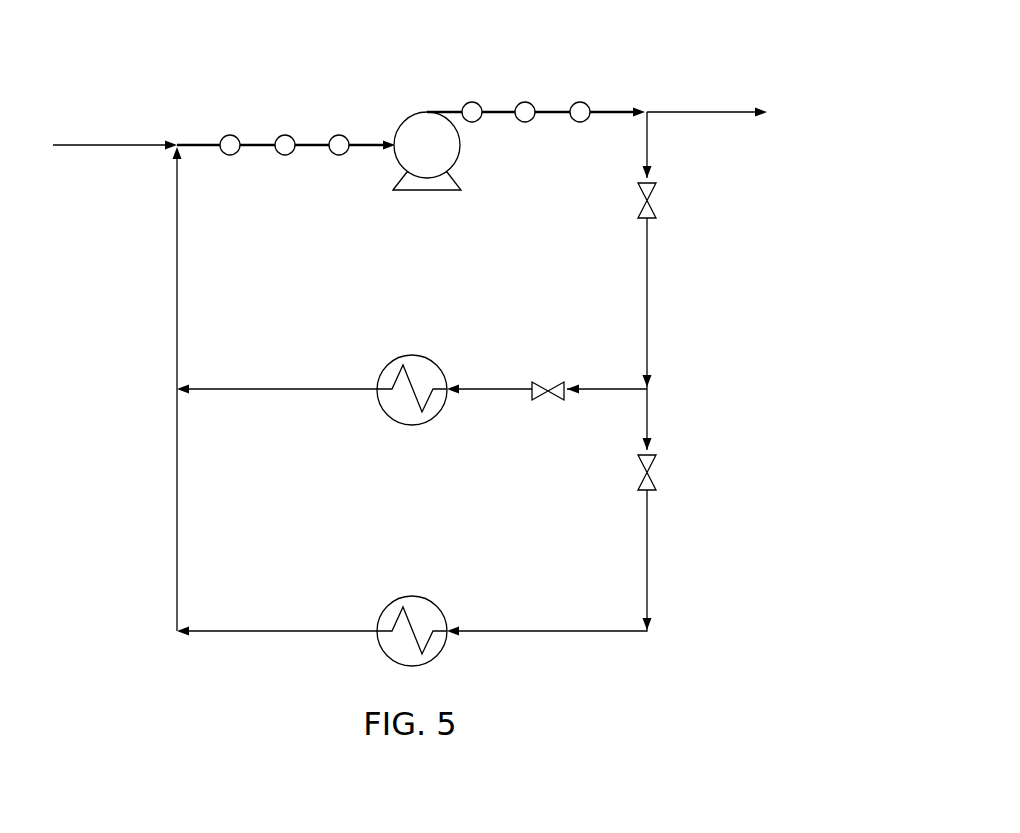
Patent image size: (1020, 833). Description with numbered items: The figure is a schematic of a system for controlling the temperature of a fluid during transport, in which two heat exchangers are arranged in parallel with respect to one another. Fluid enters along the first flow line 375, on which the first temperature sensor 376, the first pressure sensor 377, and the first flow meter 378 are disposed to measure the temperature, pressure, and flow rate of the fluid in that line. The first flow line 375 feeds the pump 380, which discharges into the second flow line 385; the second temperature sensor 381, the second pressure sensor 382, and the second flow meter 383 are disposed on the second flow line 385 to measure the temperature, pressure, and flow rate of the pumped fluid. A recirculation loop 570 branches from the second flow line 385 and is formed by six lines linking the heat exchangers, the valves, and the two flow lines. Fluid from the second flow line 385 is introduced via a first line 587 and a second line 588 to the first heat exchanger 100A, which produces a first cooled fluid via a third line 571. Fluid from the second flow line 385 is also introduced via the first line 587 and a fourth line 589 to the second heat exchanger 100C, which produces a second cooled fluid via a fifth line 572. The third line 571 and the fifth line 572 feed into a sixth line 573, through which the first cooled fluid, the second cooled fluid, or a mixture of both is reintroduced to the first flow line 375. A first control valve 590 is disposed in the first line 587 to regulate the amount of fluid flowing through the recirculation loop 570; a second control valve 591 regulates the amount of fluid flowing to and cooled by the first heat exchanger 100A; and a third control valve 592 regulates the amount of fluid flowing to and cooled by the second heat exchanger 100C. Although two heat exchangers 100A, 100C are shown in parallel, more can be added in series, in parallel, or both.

The first flow line 375 is at (98, 143).
The first temperature sensor 376 is at (230, 133).
The first pressure sensor 377 is at (285, 133).
The first flow meter 378 is at (339, 133).
The pump 380 is at (412, 159).
The second temperature sensor 381 is at (470, 100).
The second pressure sensor 382 is at (524, 100).
The second flow meter 383 is at (579, 100).
The second flow line 385 is at (550, 116).
The recirculation loop 570 is at (164, 213).
The third line 571 is at (342, 386).
The fifth line 572 is at (296, 628).
The sixth line 573 is at (180, 338).
The first line 587 is at (649, 333).
The second line 588 is at (481, 392).
The fourth line 589 is at (650, 572).
The first control valve 590 is at (651, 203).
The second control valve 591 is at (551, 402).
The third control valve 592 is at (653, 478).
The first heat exchanger 100A is at (437, 345).
The second heat exchanger 100C is at (437, 585).